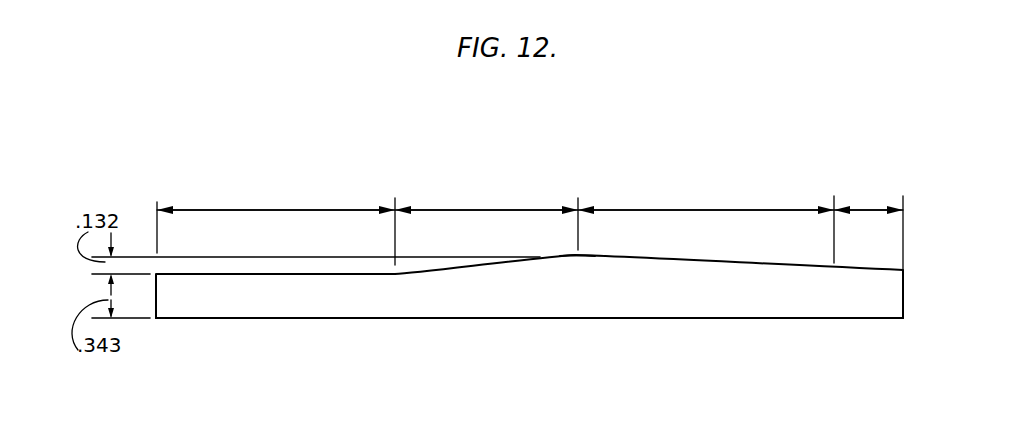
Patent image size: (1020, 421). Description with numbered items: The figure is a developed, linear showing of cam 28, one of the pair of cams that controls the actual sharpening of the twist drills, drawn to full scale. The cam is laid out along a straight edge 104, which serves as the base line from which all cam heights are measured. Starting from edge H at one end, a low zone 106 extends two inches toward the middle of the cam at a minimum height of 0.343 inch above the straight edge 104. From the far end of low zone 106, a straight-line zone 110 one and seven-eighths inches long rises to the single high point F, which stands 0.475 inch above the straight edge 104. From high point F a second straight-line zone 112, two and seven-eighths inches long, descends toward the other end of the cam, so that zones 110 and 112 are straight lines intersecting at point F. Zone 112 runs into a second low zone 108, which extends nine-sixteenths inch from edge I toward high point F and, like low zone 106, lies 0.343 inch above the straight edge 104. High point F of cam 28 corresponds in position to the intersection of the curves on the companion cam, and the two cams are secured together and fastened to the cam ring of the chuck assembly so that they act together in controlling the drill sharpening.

The cam 28 is at (405, 323).
The straight edge 104 is at (500, 318).
The low zone 106 is at (278, 210).
The zone 110 is at (460, 210).
The zone 112 is at (690, 210).
The low zone 108 is at (862, 210).
The high point F is at (582, 256).
The edge H is at (157, 305).
The edge I is at (903, 295).